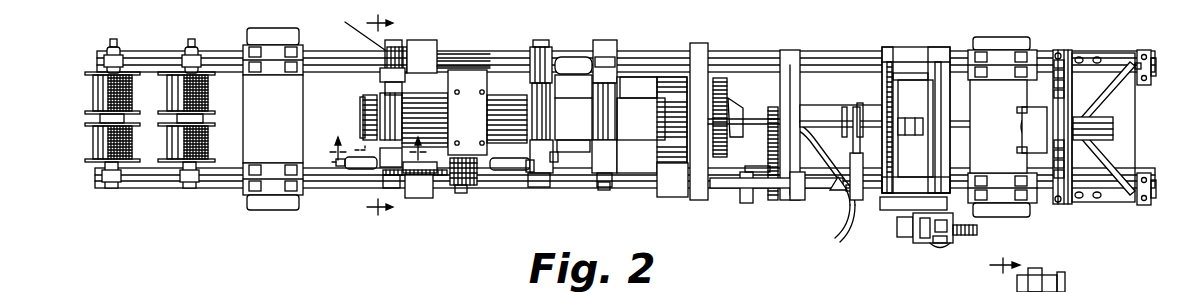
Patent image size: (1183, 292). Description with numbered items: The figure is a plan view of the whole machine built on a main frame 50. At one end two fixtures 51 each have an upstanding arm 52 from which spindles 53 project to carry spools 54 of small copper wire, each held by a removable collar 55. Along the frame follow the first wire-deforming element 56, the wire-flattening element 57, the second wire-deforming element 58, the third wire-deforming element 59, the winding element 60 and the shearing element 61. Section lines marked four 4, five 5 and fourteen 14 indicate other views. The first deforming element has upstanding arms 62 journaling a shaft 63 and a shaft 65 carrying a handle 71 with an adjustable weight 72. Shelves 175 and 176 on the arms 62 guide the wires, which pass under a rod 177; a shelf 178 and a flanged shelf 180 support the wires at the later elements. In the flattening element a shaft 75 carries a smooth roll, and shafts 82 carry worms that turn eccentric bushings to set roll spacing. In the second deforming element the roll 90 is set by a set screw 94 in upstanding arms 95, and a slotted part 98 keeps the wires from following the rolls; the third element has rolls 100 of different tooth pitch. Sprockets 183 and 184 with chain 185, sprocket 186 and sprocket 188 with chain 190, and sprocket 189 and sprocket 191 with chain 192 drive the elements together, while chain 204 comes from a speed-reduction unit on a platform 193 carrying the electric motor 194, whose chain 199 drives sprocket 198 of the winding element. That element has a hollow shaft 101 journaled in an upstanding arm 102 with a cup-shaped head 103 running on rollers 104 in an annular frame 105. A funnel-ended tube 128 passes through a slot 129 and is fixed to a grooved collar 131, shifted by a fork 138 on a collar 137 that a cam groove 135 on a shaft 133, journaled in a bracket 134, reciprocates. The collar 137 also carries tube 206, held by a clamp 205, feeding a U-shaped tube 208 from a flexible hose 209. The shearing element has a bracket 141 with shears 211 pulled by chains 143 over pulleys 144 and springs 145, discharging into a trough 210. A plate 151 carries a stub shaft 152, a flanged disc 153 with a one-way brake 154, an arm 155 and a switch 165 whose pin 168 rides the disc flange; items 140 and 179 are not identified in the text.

The section line 4- 4 is at (375, 149).
The section line 5- 5 is at (392, 122).
The section line 14- 14 is at (1027, 268).
The main frame 50 is at (756, 55).
The fixtures 51 is at (190, 47).
The upstanding arm 52 is at (100, 117).
The spindle 53 is at (189, 47).
The spool 54 is at (86, 73).
The removable collar 55 is at (188, 64).
The first wire-deforming element 56 is at (412, 42).
The wire-flattening element 57 is at (470, 52).
The second wire-deforming element 58 is at (560, 57).
The third wire-deforming element 59 is at (612, 43).
The winding element 60 is at (910, 62).
The shearing element 61 is at (1092, 56).
The upstanding arms 62 is at (380, 76).
The shaft 63 is at (385, 60).
The shaft 65 is at (390, 115).
The handle 71 is at (338, 168).
The weight 72 is at (360, 170).
The shaft 75 is at (472, 190).
The shaft 82 is at (440, 95).
The roll 90 is at (550, 120).
The set screw 94 is at (562, 162).
The upstanding arms 95 is at (538, 47).
The part 98 is at (560, 100).
The rolls 100 is at (612, 125).
The hollow shaft 101 is at (806, 115).
The upstanding arm 102 is at (800, 108).
The cup-shaped head 103 is at (915, 95).
The rollers 104 is at (905, 135).
The annular frame 105 is at (890, 62).
The tube 128 is at (975, 121).
The slot 129 is at (815, 140).
The grooved collar 131 is at (856, 107).
The shaft 133 is at (800, 200).
The bracket 134 is at (746, 203).
The cam groove 135 is at (838, 192).
The collar 137 is at (760, 188).
The fork 138 is at (845, 115).
The rack 140 is at (768, 150).
The bracket 141 is at (1085, 205).
The chain 143 is at (1055, 70).
The pulley 144 is at (1066, 92).
The spring 145 is at (1063, 52).
The plate 151 is at (965, 180).
The stub shaft 152 is at (942, 250).
The flanged disc 153 is at (977, 230).
The one-way brake 154 is at (893, 210).
The arm 155 is at (950, 228).
The switch 165 is at (898, 237).
The pin 168 is at (922, 243).
The shelf 175 is at (363, 100).
The shelf 176 is at (415, 105).
The rod 177 is at (363, 128).
The shelf 178 is at (507, 100).
The plate 179 is at (600, 110).
The flanged shelf 180 is at (640, 150).
The sprocket 183 is at (355, 28).
The sprocket 184 is at (545, 45).
The chain 185 is at (440, 55).
The sprocket 186 is at (385, 172).
The sprocket 188 is at (475, 180).
The sprocket 189 is at (463, 193).
The chain 190 is at (420, 198).
The sprocket 191 is at (612, 186).
The chain 192 is at (600, 190).
The platform 193 is at (545, 190).
The electric motor 194 is at (645, 90).
The sprocket 198 is at (790, 62).
The chain 199 is at (720, 78).
The chain 204 is at (437, 176).
The clamp 205 is at (860, 192).
The tube 206 is at (748, 170).
The U-shaped tube 208 is at (712, 160).
The flexible hose 209 is at (838, 240).
The trough 210 is at (1113, 130).
The shears 211 is at (1108, 100).